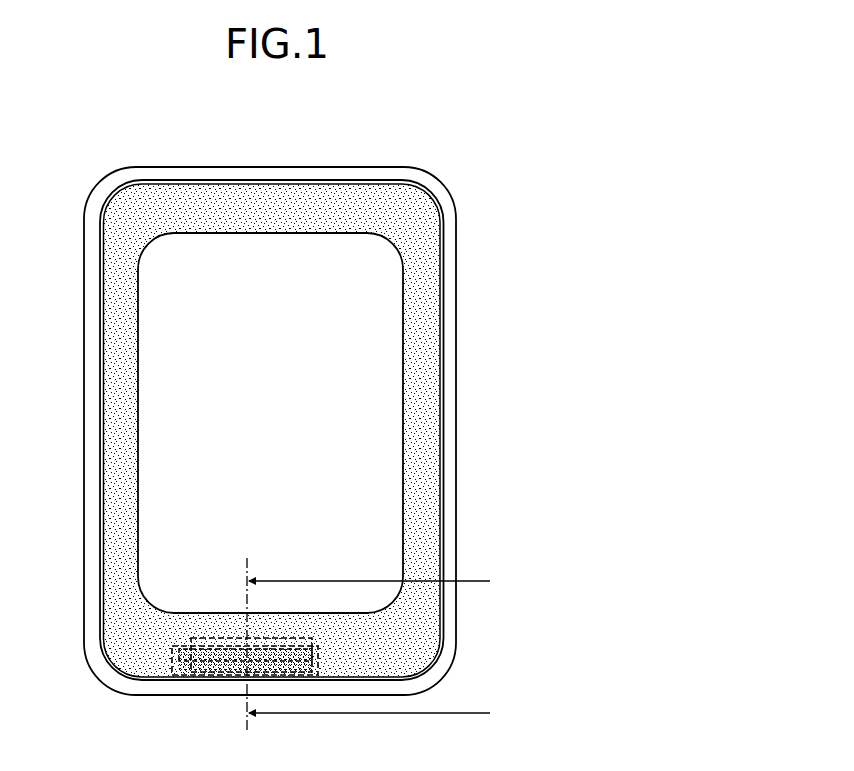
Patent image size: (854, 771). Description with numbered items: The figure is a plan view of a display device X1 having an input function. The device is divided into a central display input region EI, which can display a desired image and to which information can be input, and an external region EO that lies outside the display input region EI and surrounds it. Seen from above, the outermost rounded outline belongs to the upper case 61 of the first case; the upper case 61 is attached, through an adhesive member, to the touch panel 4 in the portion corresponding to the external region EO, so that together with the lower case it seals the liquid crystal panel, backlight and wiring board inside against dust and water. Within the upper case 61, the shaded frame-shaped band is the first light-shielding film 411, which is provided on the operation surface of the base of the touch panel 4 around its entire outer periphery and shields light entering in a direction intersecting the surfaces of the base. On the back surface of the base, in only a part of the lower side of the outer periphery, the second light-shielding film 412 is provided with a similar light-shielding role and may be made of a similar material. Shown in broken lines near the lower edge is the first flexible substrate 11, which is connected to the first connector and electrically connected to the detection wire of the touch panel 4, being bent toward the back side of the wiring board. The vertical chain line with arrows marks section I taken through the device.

The display device having an input function X1 is at (430, 112).
The upper case 61 is at (452, 470).
The touch panel 4 is at (392, 413).
The first light-shielding film 411 is at (423, 533).
The second light-shielding film 412 is at (193, 669).
The first flexible substrate 11 is at (186, 640).
The external region EO is at (425, 291).
The display input region EI is at (357, 344).
The section line I- I is at (375, 644).